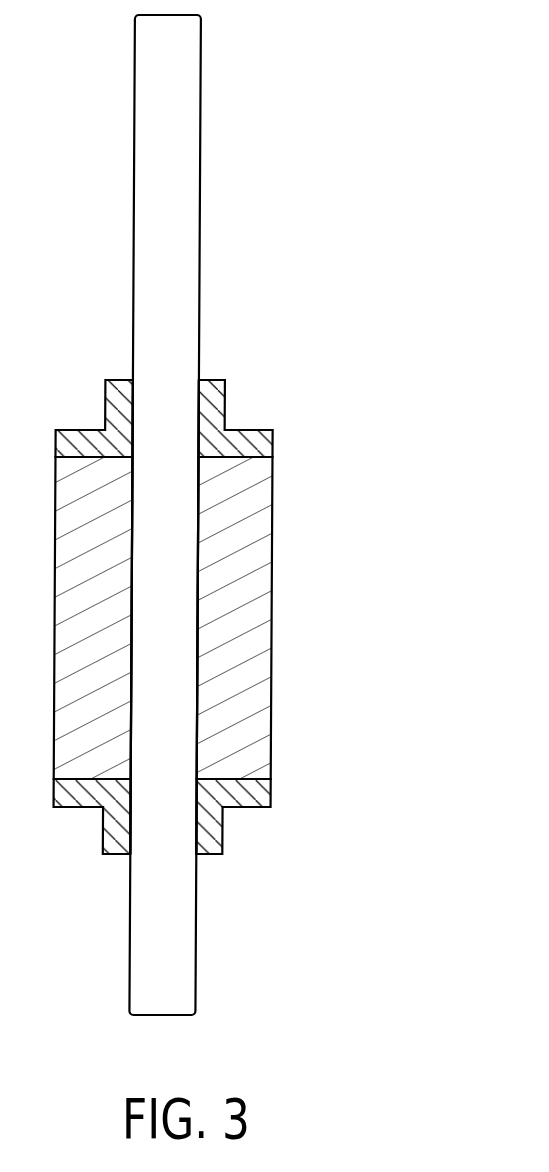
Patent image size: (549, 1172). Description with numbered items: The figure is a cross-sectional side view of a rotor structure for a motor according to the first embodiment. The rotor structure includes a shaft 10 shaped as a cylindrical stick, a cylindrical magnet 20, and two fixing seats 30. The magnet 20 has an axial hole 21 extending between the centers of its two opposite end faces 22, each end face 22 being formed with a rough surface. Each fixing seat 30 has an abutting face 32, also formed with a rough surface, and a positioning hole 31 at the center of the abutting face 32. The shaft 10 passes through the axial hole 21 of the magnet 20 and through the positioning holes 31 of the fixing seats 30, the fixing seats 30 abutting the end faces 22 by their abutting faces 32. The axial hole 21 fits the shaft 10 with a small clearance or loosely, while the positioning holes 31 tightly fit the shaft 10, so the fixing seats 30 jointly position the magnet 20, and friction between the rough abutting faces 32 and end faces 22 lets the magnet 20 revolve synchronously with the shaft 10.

The shaft 10 is at (178, 268).
The magnet 20 is at (253, 612).
The axial hole 21 is at (196, 615).
The end faces 22 is at (237, 457).
The fixing seat 30 is at (208, 405).
The positioning hole 31 is at (200, 405).
The abutting face 32 is at (238, 773).